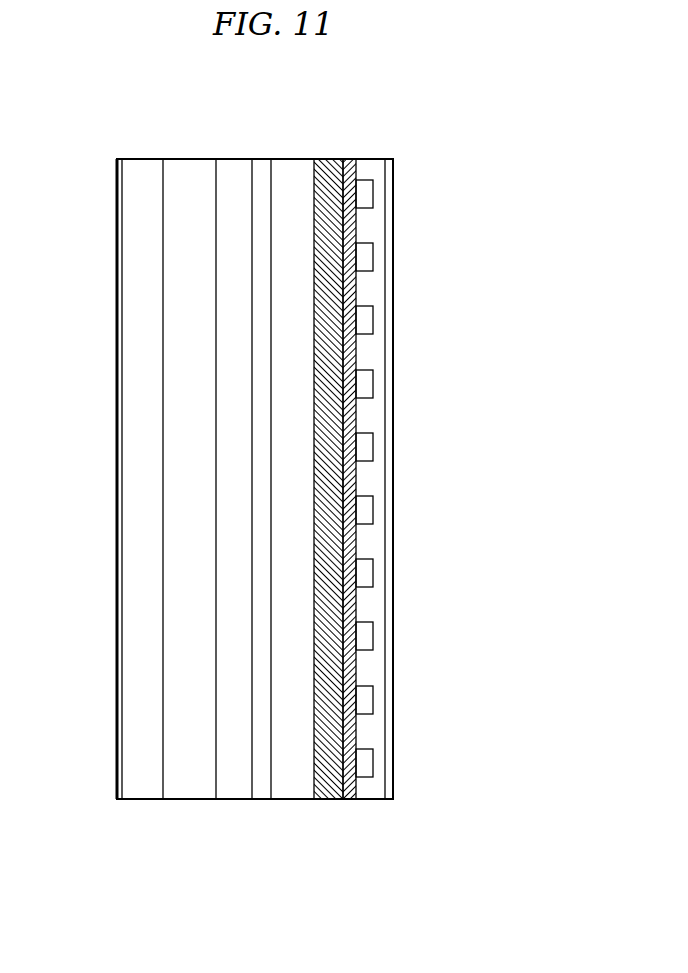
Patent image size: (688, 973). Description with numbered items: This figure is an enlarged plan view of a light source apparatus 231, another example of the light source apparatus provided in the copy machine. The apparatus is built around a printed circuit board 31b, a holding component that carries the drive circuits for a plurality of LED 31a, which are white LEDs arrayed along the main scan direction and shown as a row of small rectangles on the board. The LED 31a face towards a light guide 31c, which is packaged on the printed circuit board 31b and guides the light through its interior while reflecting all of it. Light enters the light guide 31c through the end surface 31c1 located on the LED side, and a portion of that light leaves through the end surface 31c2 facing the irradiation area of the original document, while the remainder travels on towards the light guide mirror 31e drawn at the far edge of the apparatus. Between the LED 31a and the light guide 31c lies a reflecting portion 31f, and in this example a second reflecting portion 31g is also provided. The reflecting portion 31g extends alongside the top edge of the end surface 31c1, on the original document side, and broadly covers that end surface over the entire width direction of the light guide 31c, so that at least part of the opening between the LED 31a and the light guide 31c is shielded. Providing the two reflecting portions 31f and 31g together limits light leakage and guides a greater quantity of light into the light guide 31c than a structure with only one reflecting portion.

The light source apparatus 231 is at (478, 229).
The LED 31a is at (373, 323).
The printed circuit board 31b is at (382, 665).
The light guide 31c is at (299, 193).
The end surface 31c1 is at (331, 160).
The end surface 31c2 is at (222, 193).
The light guide mirror 31e is at (142, 192).
The reflecting portion 31f is at (355, 799).
The reflecting portion 31g is at (330, 799).